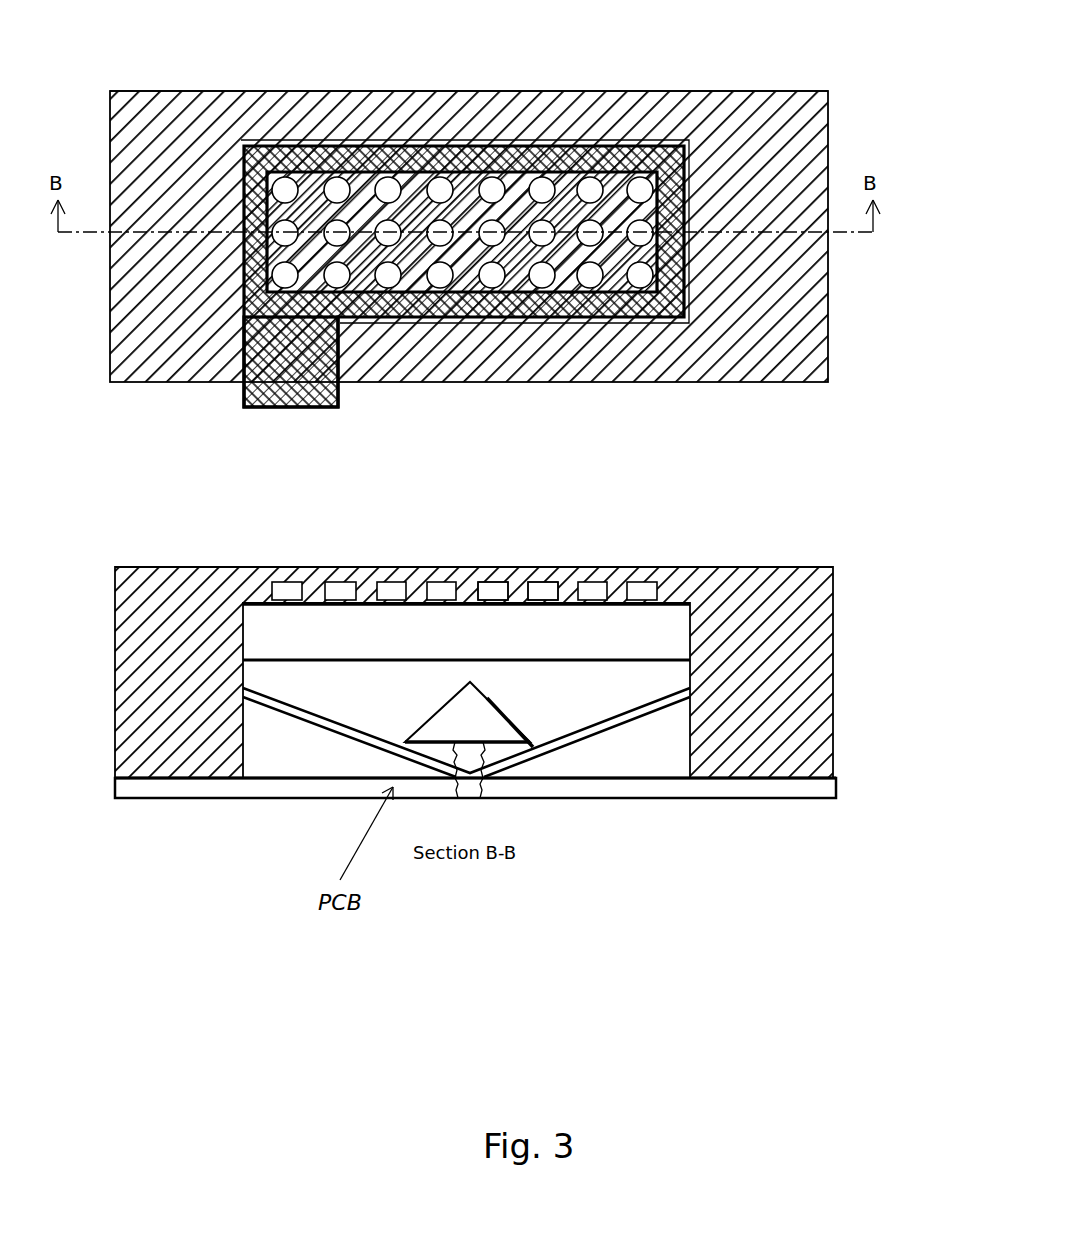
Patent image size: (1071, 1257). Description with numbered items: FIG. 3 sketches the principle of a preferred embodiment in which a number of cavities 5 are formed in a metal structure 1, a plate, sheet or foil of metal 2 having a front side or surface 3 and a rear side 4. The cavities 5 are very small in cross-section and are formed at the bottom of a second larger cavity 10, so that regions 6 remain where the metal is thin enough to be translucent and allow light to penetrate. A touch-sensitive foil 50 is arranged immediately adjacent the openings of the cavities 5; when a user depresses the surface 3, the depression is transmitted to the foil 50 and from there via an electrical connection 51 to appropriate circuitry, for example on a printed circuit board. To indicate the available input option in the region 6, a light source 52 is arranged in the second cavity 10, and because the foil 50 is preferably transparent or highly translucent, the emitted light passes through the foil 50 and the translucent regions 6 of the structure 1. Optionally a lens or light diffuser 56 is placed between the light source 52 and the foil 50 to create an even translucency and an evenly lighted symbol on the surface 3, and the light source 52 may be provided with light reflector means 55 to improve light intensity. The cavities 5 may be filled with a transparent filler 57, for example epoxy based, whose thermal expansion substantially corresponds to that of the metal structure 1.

The metal structure 1 is at (118, 72).
The metal 2 is at (755, 350).
The front side or surface 3 is at (228, 565).
The rear side 4 is at (237, 782).
The cavities 5 is at (320, 150).
The regions 6 is at (388, 568).
The second larger cavity 10 is at (490, 140).
The touch-sensitive foil 50 is at (625, 132).
The electrical connection 51 is at (245, 408).
The light source 52 is at (493, 642).
The light reflector means 55 is at (488, 722).
The lens or light diffuser 56 is at (577, 748).
The transparent filler 57 is at (512, 578).